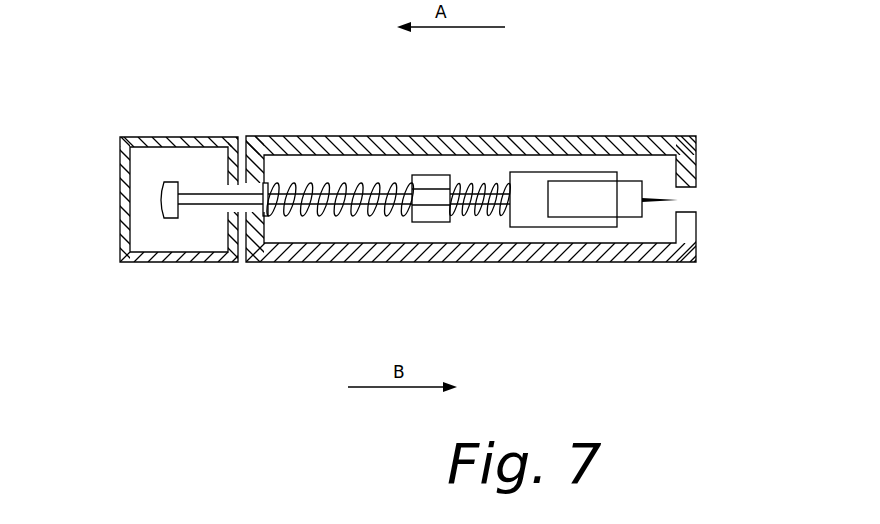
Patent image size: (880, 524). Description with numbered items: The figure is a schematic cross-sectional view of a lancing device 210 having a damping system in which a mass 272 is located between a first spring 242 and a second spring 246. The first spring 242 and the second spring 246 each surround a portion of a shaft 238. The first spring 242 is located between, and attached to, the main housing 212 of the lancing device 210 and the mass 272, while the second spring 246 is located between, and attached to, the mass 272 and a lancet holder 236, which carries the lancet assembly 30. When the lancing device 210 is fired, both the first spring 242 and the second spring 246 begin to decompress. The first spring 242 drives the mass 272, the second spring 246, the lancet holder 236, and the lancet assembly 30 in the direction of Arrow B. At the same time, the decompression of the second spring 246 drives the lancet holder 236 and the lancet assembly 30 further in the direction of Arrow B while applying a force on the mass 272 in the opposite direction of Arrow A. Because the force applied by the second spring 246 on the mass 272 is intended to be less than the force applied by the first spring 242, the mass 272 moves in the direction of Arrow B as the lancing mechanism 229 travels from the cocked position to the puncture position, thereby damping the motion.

The lancing device 210 is at (103, 82).
The main housing 212 is at (645, 137).
The lancet assembly 30 is at (667, 170).
The first spring 242 is at (293, 184).
The lancing mechanism 229 is at (334, 230).
The shaft 238 is at (385, 184).
The mass 272 is at (427, 222).
The second spring 246 is at (493, 184).
The lancet holder 236 is at (540, 222).